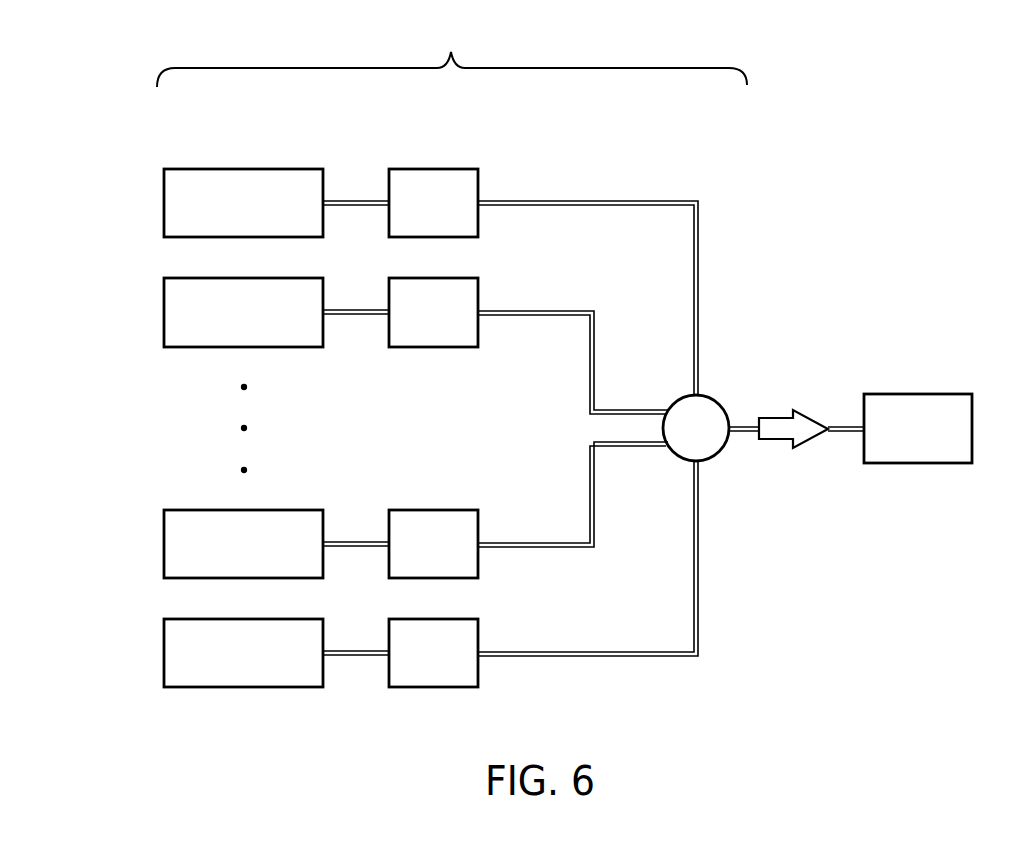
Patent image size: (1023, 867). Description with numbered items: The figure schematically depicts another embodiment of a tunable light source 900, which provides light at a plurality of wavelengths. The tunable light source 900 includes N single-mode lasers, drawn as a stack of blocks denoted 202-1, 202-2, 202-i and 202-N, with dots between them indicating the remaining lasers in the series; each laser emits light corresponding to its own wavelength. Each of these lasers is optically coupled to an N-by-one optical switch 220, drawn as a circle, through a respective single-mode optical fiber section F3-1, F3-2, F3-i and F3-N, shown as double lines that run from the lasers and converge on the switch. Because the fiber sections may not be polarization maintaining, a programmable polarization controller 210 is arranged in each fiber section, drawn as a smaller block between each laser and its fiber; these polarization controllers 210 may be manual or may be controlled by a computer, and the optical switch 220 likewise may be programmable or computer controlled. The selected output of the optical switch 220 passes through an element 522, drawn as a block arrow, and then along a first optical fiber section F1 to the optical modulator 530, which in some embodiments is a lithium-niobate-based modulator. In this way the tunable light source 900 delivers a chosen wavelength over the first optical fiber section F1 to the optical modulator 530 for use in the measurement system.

The tunable light source 900 is at (452, 54).
The single-mode laser 202-1 is at (288, 178).
The single-mode laser 202-2 is at (288, 335).
The single-mode laser 202-i is at (288, 518).
The single-mode laser 202-N is at (288, 675).
The programmable polarization controller 210 is at (460, 178).
The single-mode optical fiber section F3-1 is at (630, 200).
The single-mode optical fiber section F3-2 is at (570, 311).
The single-mode optical fiber section F3-i is at (540, 545).
The single-mode optical fiber section F3-N is at (620, 652).
The N×1 optical switch 220 is at (715, 396).
The optical amplifier 522 is at (788, 416).
The first optical fiber section F1 is at (850, 434).
The optical modulator 530 is at (946, 402).